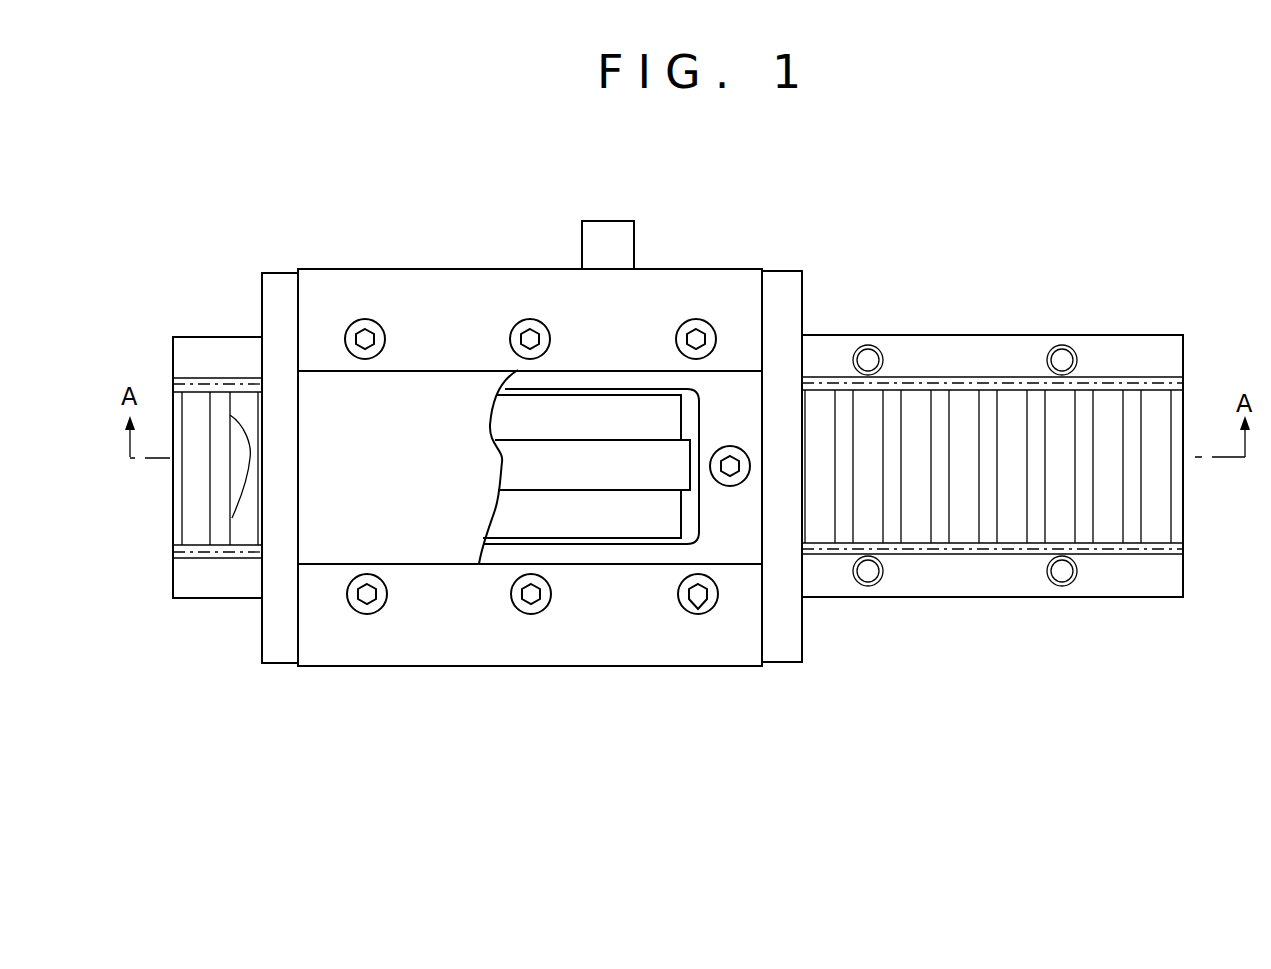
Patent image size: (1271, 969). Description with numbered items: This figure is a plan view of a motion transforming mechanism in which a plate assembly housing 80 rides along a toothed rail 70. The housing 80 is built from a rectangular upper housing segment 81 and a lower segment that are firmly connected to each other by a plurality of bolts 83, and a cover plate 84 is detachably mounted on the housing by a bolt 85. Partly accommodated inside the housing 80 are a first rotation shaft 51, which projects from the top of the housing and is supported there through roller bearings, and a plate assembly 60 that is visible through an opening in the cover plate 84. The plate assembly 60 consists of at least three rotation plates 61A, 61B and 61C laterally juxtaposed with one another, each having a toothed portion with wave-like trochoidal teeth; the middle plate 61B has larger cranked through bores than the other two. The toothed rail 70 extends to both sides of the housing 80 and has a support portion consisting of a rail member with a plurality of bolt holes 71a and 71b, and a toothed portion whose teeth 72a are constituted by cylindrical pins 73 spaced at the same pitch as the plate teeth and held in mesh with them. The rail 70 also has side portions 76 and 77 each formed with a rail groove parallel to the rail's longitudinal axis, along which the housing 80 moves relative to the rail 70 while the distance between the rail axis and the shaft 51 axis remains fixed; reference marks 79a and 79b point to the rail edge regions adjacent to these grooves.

The first rotation shaft 51 is at (608, 222).
The plate assembly 60 is at (601, 372).
The rotation plate 61A is at (497, 418).
The rotation plate 61B is at (528, 465).
The rotation plate 61C is at (503, 518).
The toothed rail 70 is at (719, 456).
The bolt holes 71a is at (872, 576).
The bolt holes 71b is at (870, 352).
The teeth 72a is at (1028, 408).
The cylindrical pins 73 is at (238, 532).
The side portion 76 is at (955, 343).
The side portion 77 is at (963, 588).
The lower guide groove 79a is at (1155, 553).
The upper guide groove 79b is at (1155, 372).
The plate assembly housing 80 is at (567, 428).
The upper housing segment 81 is at (358, 290).
The bolts 83 is at (385, 326).
The cover plate 84 is at (455, 371).
The bolt 85 is at (730, 447).